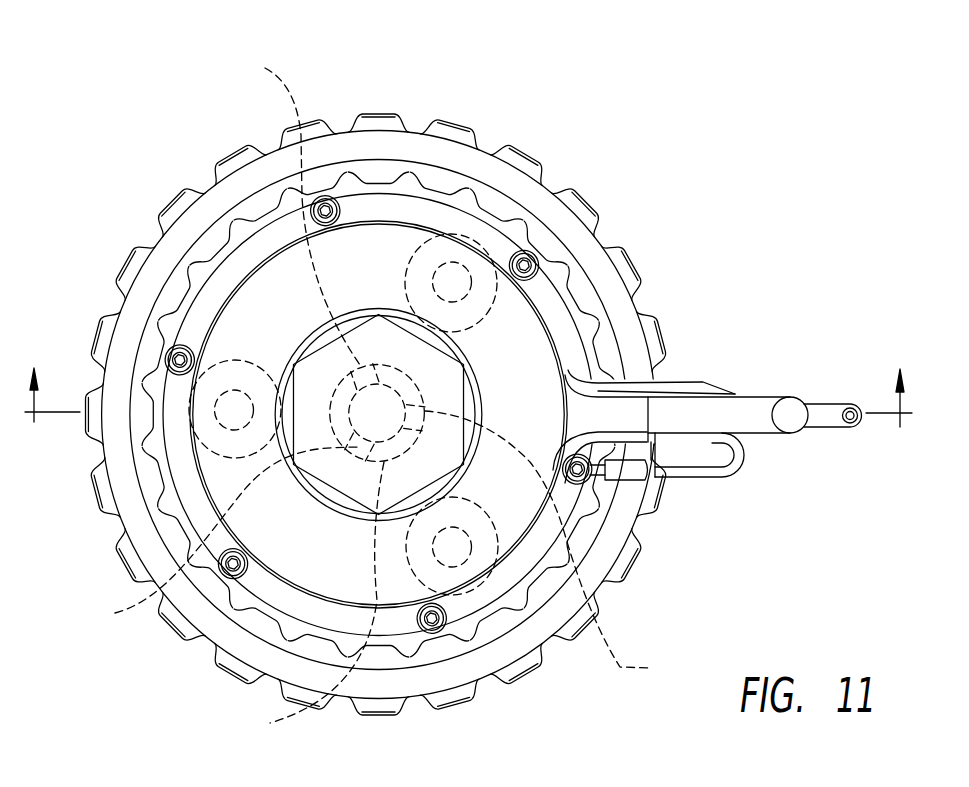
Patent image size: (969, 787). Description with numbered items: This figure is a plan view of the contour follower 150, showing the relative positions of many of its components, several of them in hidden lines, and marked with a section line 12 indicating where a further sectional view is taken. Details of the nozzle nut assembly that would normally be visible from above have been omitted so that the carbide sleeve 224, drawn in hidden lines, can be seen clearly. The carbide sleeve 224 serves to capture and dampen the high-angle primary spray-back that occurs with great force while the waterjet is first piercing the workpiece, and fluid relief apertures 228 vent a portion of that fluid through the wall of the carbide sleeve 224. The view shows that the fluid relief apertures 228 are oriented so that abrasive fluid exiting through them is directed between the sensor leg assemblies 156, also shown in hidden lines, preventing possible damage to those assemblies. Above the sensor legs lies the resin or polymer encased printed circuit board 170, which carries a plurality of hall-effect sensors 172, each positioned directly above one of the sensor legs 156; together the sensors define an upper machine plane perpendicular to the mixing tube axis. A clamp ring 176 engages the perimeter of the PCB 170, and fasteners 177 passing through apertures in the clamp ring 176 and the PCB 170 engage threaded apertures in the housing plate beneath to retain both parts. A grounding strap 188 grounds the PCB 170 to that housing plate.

The contour follower 150 is at (190, 118).
The sensor leg assemblies 156 is at (227, 383).
The printed circuit board 170 is at (273, 310).
The hall-effect sensors 172 is at (232, 411).
The clamp ring 176 is at (415, 203).
The fasteners 177 is at (336, 197).
The grounding strap 188 is at (717, 388).
The carbide sleeve 224 is at (309, 600).
The fluid relief apertures 228 is at (690, 550).
The section line 12- 12 is at (468, 415).